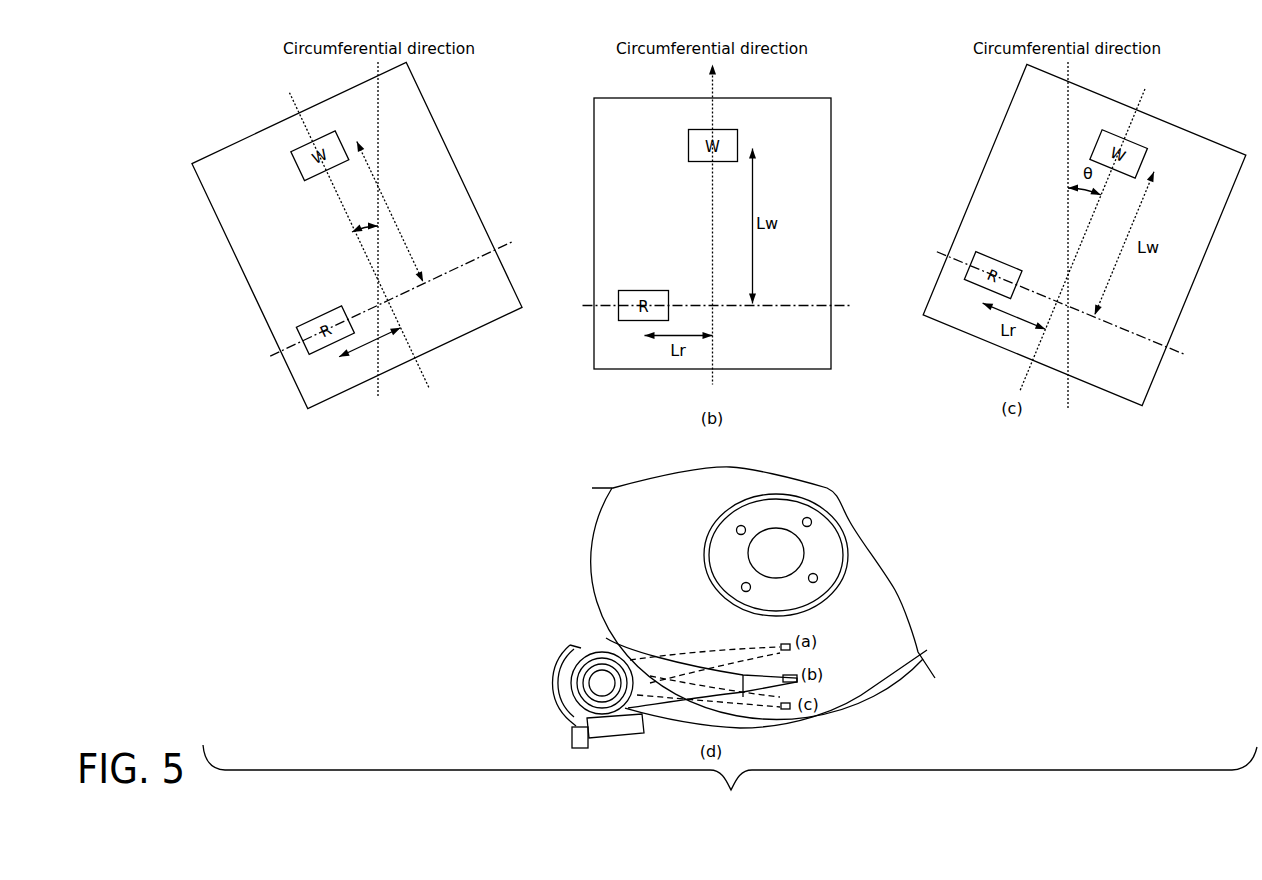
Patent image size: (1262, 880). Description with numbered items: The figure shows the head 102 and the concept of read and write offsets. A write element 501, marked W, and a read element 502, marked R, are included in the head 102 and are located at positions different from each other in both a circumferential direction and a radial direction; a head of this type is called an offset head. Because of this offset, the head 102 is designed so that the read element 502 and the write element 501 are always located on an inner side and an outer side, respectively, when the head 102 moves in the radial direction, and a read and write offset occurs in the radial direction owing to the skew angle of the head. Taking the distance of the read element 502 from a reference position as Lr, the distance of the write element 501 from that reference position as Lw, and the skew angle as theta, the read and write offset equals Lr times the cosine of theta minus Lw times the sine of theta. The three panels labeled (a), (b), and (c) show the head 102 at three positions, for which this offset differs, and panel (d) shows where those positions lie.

The head 102 is at (463, 97).
The write element 501 is at (298, 167).
The read element 502 is at (307, 326).